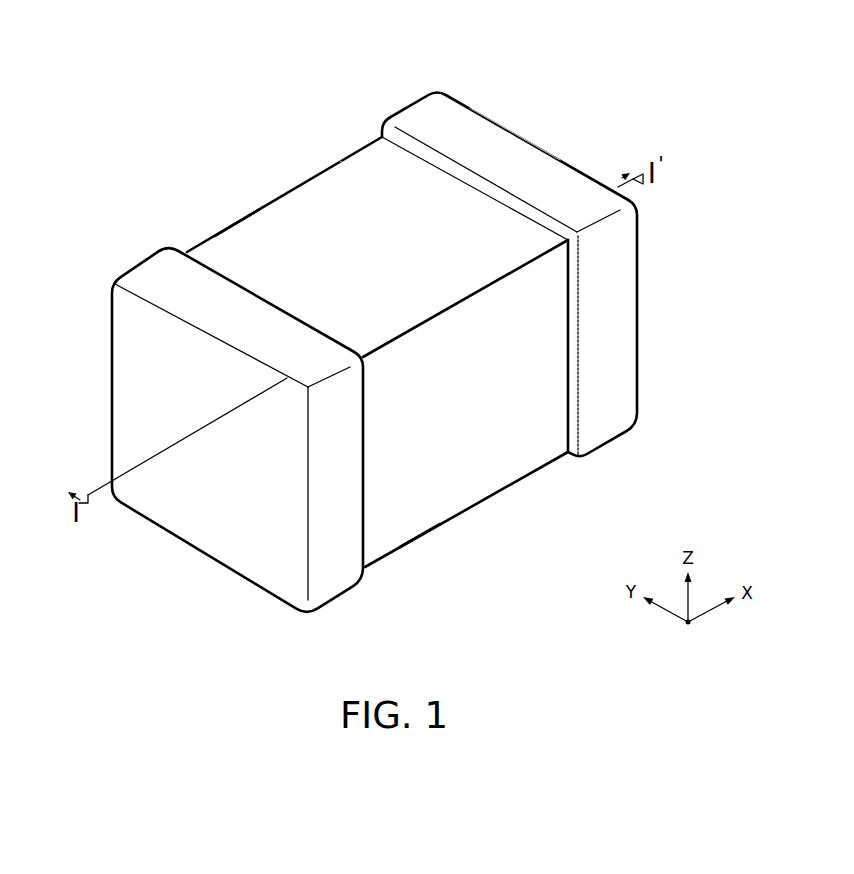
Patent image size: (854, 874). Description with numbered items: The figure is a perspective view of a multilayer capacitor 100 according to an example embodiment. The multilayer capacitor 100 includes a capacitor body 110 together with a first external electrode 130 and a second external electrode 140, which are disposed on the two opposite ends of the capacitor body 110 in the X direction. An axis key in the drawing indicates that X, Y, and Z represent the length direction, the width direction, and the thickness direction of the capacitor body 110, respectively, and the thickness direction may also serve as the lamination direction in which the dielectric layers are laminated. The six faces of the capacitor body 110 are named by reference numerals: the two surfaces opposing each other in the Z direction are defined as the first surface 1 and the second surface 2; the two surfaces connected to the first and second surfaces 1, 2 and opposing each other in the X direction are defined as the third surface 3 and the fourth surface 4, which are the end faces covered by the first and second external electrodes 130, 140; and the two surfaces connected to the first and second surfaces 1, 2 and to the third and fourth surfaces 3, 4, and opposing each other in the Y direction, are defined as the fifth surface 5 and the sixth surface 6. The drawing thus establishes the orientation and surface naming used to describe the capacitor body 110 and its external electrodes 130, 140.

The multilayer capacitor 100 is at (188, 34).
The capacitor body 110 is at (310, 192).
The first external electrode 130 is at (140, 408).
The second external electrode 140 is at (613, 321).
The first surface 1 is at (417, 533).
The second surface 2 is at (361, 180).
The third surface 3 is at (193, 513).
The fourth surface 4 is at (515, 138).
The fifth surface 5 is at (507, 450).
The sixth surface 6 is at (235, 230).